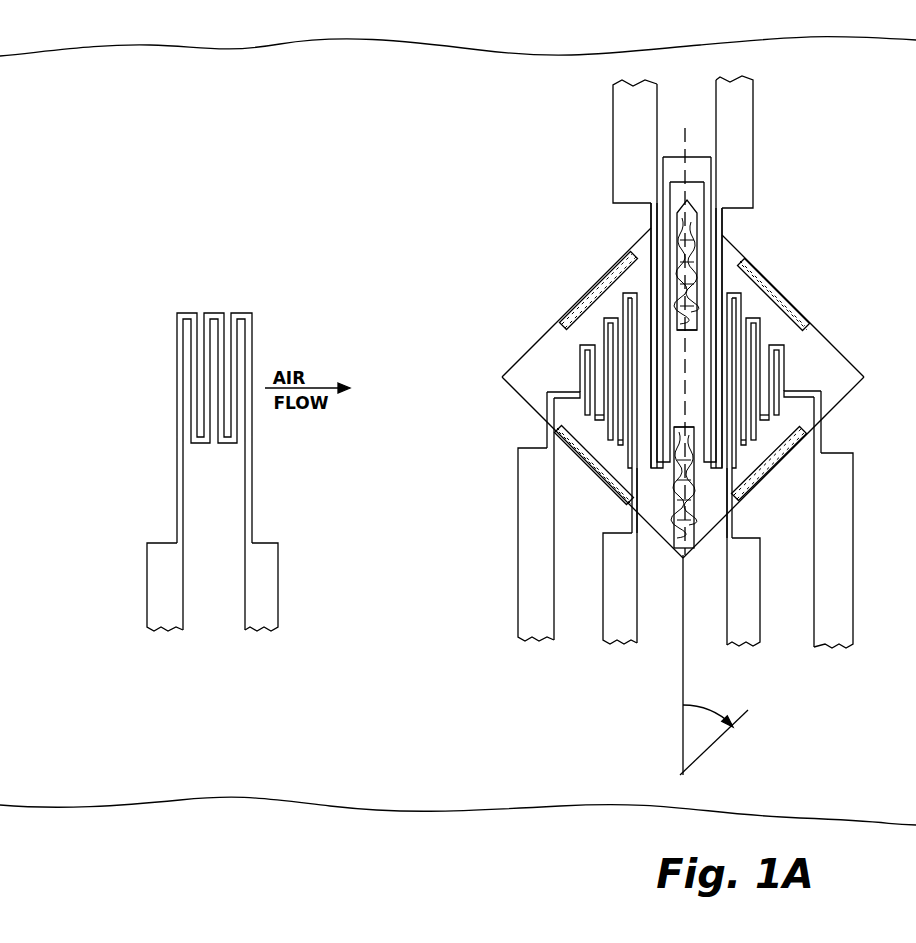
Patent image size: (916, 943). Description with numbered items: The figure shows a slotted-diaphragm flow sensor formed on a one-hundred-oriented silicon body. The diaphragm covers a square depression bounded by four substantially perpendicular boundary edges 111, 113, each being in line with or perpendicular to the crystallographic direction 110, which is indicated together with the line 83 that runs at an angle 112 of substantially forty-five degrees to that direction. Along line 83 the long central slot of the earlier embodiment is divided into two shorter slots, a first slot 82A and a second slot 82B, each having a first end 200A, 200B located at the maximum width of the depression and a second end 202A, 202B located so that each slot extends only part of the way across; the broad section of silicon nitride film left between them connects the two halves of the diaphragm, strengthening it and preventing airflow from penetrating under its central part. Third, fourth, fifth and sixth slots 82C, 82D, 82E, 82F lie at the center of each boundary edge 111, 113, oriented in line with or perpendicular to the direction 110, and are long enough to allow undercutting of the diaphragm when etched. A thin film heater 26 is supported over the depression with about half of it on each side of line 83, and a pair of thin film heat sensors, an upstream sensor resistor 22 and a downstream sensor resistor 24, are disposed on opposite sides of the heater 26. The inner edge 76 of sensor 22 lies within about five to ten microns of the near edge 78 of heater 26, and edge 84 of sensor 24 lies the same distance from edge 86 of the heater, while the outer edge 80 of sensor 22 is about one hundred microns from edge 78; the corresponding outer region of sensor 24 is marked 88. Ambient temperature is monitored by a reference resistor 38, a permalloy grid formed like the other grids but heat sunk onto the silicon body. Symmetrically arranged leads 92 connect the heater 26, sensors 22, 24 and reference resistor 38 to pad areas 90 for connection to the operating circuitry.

The reference resistor 38 is at (216, 313).
The leads 92 is at (185, 479).
The pad areas 90 is at (151, 595).
The thin film heater 26 is at (697, 171).
The first end of first slot 200A is at (672, 212).
The first end of second slot 200B is at (684, 557).
The first slot 82A is at (692, 247).
The second slot 82B is at (682, 546).
The third slot 82C is at (596, 275).
The fourth slot 82D is at (793, 294).
The fifth slot 82E is at (783, 472).
The sixth slot 82F is at (603, 495).
The near edge of heater resistor 78 is at (651, 258).
The edge of heater 86 is at (720, 262).
The inner edge of upstream sensor resistor 76 is at (638, 483).
The edge of sensor 84 is at (727, 480).
The upstream sensor resistor 22 is at (592, 313).
The downstream sensor resistor 24 is at (766, 334).
The outer edge of sensor resistor grid 80 is at (578, 370).
The sensor connection member 88 is at (798, 370).
The second end of first slot 202A is at (677, 336).
The second end of second slot 202B is at (672, 430).
The boundary edges 111 is at (515, 348).
The boundary edges 113 is at (510, 404).
The line 83 is at (683, 688).
The angle 112 is at (693, 719).
The [110] direction 110 is at (716, 747).